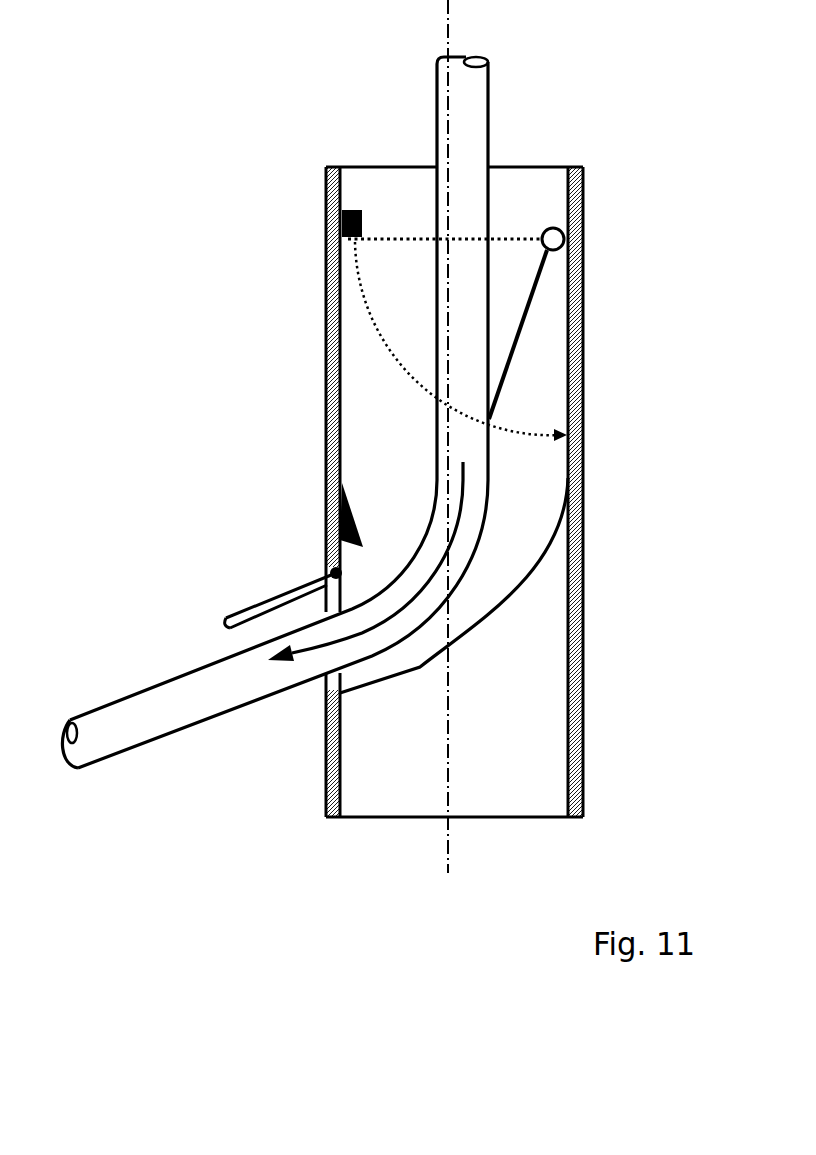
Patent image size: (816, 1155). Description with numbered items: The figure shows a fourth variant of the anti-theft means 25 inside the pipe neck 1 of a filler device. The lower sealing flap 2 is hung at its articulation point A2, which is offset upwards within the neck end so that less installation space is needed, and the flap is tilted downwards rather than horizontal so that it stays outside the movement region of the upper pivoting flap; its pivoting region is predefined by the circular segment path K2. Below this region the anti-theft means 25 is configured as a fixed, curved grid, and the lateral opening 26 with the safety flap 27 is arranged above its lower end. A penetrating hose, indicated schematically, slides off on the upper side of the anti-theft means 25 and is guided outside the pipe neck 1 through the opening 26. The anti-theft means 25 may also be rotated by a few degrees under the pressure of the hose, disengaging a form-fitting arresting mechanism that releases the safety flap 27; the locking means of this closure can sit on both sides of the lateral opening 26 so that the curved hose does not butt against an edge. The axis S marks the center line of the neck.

The pipe neck 1 is at (577, 515).
The lower sealing flap 2 is at (505, 243).
The anti-theft means 25 is at (513, 578).
The lateral opening 26 is at (328, 680).
The safety flap 27 is at (270, 603).
The axis S is at (452, 2).
The articulation point A2 is at (566, 243).
The circular segment path K2 is at (386, 357).